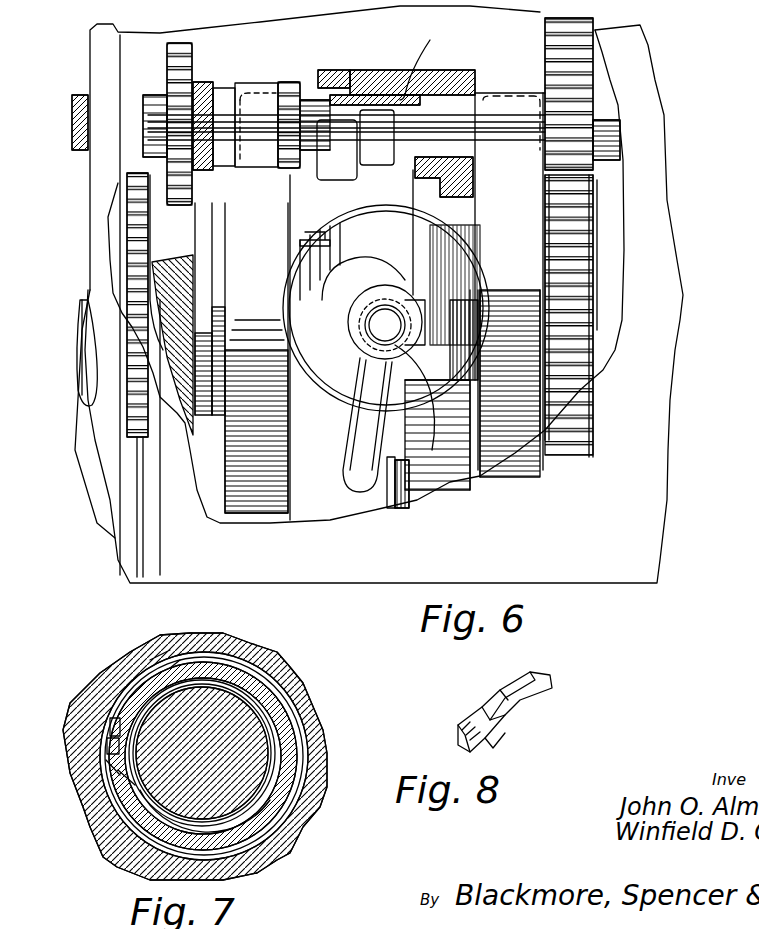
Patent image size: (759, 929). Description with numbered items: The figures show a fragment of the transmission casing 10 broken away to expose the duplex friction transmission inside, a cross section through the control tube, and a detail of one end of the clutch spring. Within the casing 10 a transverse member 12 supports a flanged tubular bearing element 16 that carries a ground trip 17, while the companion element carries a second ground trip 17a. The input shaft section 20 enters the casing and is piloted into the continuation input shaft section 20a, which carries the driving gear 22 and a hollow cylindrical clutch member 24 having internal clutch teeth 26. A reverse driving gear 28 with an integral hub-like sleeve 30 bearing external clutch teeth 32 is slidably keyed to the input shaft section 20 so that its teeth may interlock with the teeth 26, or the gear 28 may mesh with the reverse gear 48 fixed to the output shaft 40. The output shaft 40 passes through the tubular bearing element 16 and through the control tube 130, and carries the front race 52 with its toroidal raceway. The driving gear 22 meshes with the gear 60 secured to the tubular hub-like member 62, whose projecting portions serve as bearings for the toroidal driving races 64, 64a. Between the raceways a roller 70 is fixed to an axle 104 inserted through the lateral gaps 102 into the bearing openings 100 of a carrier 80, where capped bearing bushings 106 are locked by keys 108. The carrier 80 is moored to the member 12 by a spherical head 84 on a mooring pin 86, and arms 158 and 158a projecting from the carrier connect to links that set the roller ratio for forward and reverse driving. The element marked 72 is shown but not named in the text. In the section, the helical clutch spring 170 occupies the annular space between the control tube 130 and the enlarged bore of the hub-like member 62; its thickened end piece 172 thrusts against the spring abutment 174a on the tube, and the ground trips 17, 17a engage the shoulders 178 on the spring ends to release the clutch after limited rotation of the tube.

In FIG. 6, the transmission casing 10 is at (645, 500).
In FIG. 6, the transverse member 12 is at (478, 487).
In FIG. 7, the tubular bearing element 16 is at (258, 690).
In FIG. 7, the ground trip 17 is at (215, 672).
In FIG. 7, the ground trip 17a is at (130, 700).
In FIG. 6, the input shaft section 20 is at (88, 100).
In FIG. 6, the continuation input shaft section 20a is at (432, 57).
In FIG. 6, the driving gear 22 is at (560, 60).
In FIG. 6, the hollow cylindrical clutch member 24 is at (360, 77).
In FIG. 6, the internal clutch teeth 26 is at (325, 80).
In FIG. 6, the reverse driving gear 28 is at (180, 70).
In FIG. 6, the hub-like sleeve 30 is at (238, 95).
In FIG. 6, the external clutch teeth 32 is at (288, 82).
In FIG. 6, the output shaft 40 is at (95, 355).
In FIG. 7, the output shaft 40 is at (165, 710).
In FIG. 6, the reverse gear 48 is at (138, 262).
In FIG. 6, the front race 52 is at (228, 455).
In FIG. 6, the gear 60 is at (580, 300).
In FIG. 7, the tubular hub-like member 62 is at (175, 658).
In FIG. 6, the toroidal driving race 64 is at (513, 438).
In FIG. 6, the toroidal driving race 64a is at (604, 330).
In FIG. 7, the toroidal driving race 64a is at (215, 645).
In FIG. 6, the roller 70 is at (345, 220).
In FIG. 6, the web 72 is at (462, 213).
In FIG. 6, the carrier 80 is at (360, 448).
In FIG. 6, the spherical head 84 is at (393, 505).
In FIG. 6, the mooring pin 86 is at (452, 465).
In FIG. 6, the bearing opening 100 is at (370, 385).
In FIG. 6, the lateral gap 102 is at (415, 330).
In FIG. 6, the axle 104 is at (386, 310).
In FIG. 6, the capped bearing bushing 106 is at (405, 318).
In FIG. 6, the key 108 is at (362, 305).
In FIG. 7, the control tube 130 is at (265, 720).
In FIG. 6, the arm 158 is at (300, 253).
In FIG. 6, the arm 158a is at (445, 350).
In FIG. 7, the helical clutch spring 170 is at (290, 748).
In FIG. 8, the helical clutch spring 170 is at (535, 680).
In FIG. 7, the thickened end piece 172 is at (110, 742).
In FIG. 8, the thickened end piece 172 is at (500, 742).
In FIG. 7, the spring abutment 174a is at (120, 778).
In FIG. 7, the shoulder 178 is at (130, 730).
In FIG. 8, the shoulder 178 is at (512, 715).